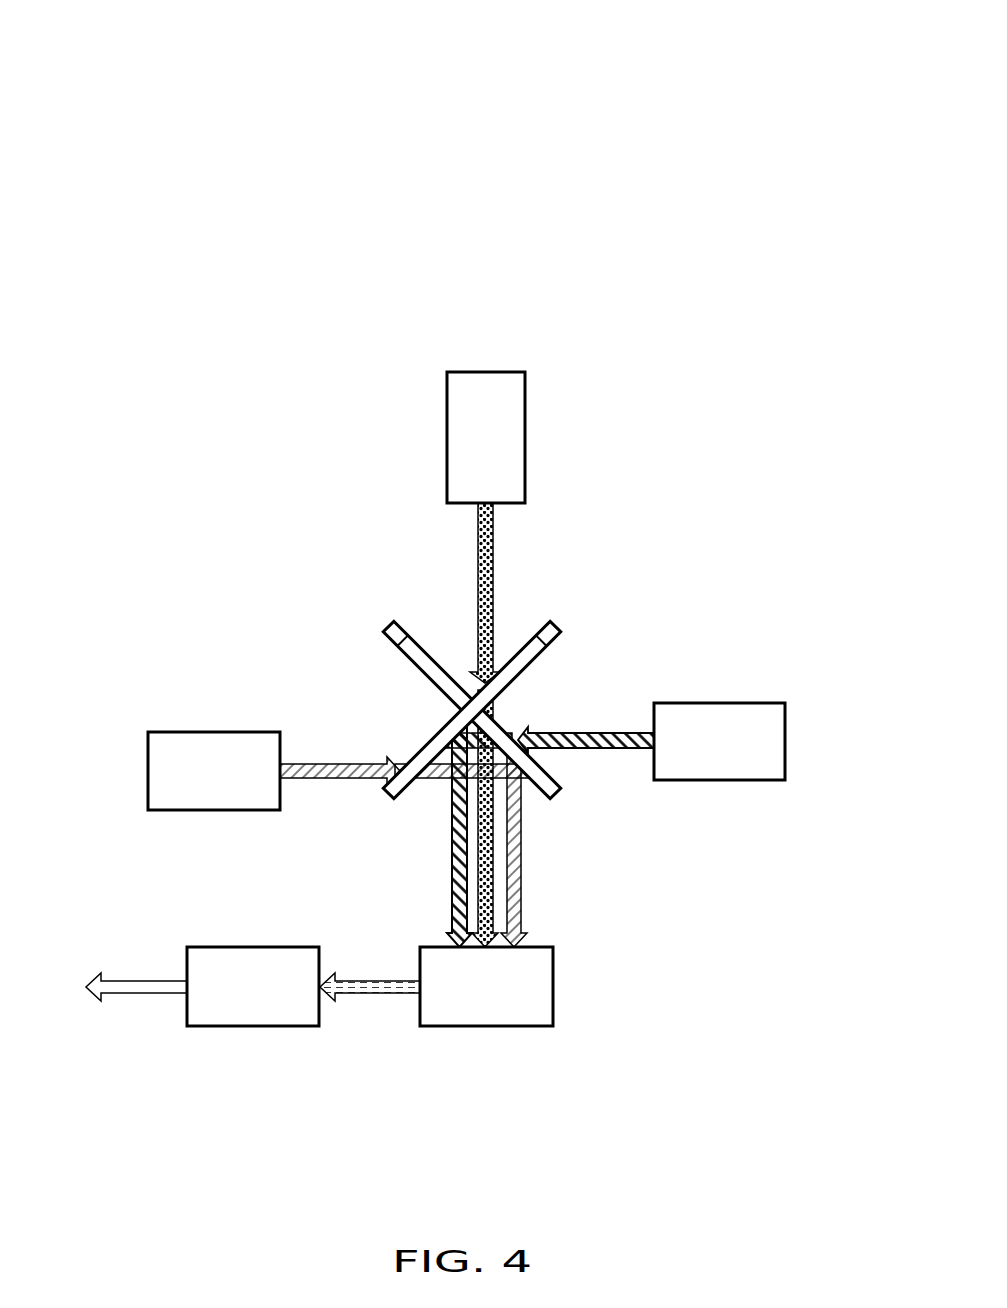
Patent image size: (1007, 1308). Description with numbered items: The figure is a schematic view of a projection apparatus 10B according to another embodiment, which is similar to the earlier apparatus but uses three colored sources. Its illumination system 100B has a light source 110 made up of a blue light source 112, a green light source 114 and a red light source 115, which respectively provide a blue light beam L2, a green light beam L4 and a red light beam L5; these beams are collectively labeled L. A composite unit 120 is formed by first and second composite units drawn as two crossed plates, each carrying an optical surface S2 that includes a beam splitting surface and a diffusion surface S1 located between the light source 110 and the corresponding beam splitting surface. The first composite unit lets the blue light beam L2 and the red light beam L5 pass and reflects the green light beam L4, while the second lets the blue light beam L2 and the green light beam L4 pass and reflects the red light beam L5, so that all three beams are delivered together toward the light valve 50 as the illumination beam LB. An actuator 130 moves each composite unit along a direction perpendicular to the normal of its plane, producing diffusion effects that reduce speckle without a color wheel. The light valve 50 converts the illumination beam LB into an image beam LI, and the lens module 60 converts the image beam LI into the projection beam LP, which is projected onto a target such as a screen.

The illumination system 100B is at (347, 292).
The projection apparatus 10B is at (824, 1108).
The light source 110 is at (101, 8).
The blue light source 112 is at (548, 442).
The green light source 114 is at (806, 742).
The red light source 115 is at (165, 771).
The light beams L is at (263, 8).
The blue light beam L2 is at (478, 544).
The green light beam L4 is at (618, 733).
The red light beam L5 is at (336, 764).
The composite unit 120 is at (414, 10).
The actuator 130 is at (396, 629).
The diffusion surface S1 is at (443, 722).
The optical surface S2 is at (408, 789).
The illumination beam LB is at (425, 898).
The image beam LI is at (372, 988).
The projection beam LP is at (143, 988).
The light valve 50 is at (485, 1007).
The lens module 60 is at (252, 1007).